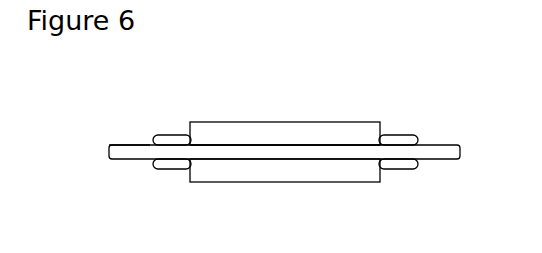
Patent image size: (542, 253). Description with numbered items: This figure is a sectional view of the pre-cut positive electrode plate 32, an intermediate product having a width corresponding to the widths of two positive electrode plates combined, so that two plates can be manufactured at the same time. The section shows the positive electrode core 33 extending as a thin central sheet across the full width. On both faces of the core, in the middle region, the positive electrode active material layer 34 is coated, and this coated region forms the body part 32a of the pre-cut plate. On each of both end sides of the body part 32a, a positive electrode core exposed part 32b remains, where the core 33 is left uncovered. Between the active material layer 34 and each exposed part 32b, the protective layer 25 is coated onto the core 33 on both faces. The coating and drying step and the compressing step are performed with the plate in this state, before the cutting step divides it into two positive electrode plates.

The pre-cut positive electrode plate 32 is at (294, 97).
The body part 32a is at (312, 122).
The positive electrode core exposed part 32b is at (137, 145).
The positive electrode core 33 is at (117, 144).
The positive electrode active material layer 34 is at (265, 122).
The protective layer 25 is at (171, 135).